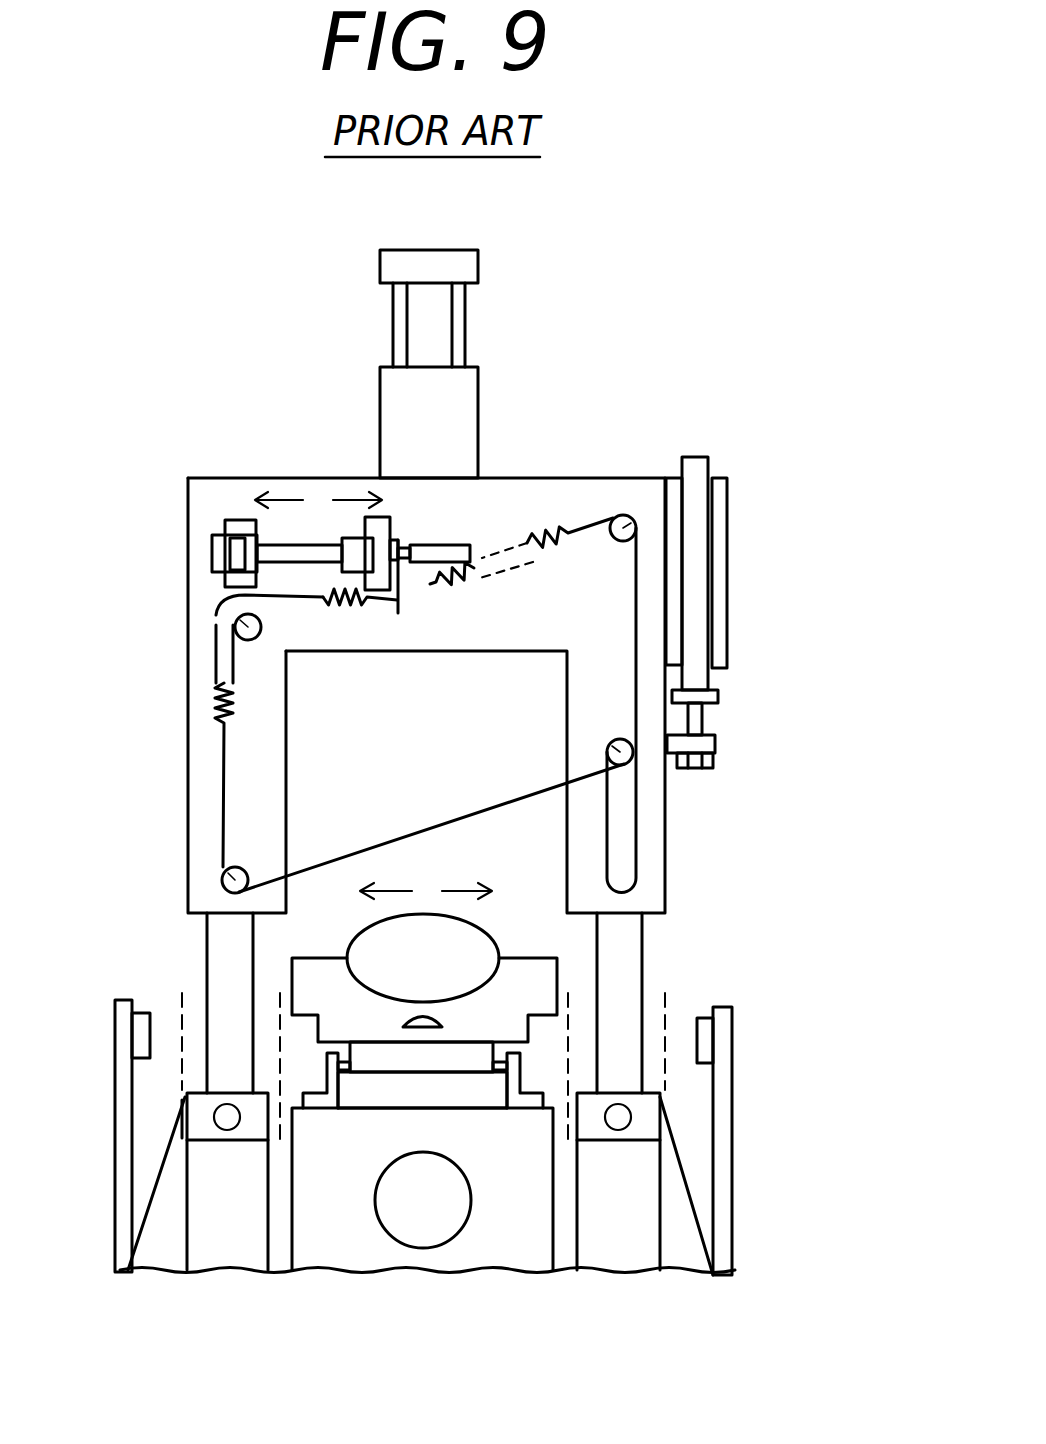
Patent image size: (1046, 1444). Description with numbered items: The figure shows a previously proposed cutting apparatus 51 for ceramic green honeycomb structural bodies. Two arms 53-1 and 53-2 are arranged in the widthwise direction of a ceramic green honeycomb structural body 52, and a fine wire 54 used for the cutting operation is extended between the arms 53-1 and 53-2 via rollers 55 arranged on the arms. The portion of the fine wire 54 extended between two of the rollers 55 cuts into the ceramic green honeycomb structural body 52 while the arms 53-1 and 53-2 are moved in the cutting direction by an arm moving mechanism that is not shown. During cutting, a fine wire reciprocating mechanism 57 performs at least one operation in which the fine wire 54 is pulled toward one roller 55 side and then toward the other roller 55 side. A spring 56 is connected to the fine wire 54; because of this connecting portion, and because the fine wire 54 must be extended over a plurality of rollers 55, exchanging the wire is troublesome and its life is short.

The cutting apparatus 51 is at (788, 428).
The ceramic green honeycomb structural body 52 is at (485, 953).
The arm 53-1 is at (188, 792).
The arm 53-2 is at (665, 818).
The fine wire 54 is at (357, 848).
The roller 55 is at (240, 620).
The spring 56 is at (540, 533).
The fine wire reciprocating mechanism 57 is at (215, 548).